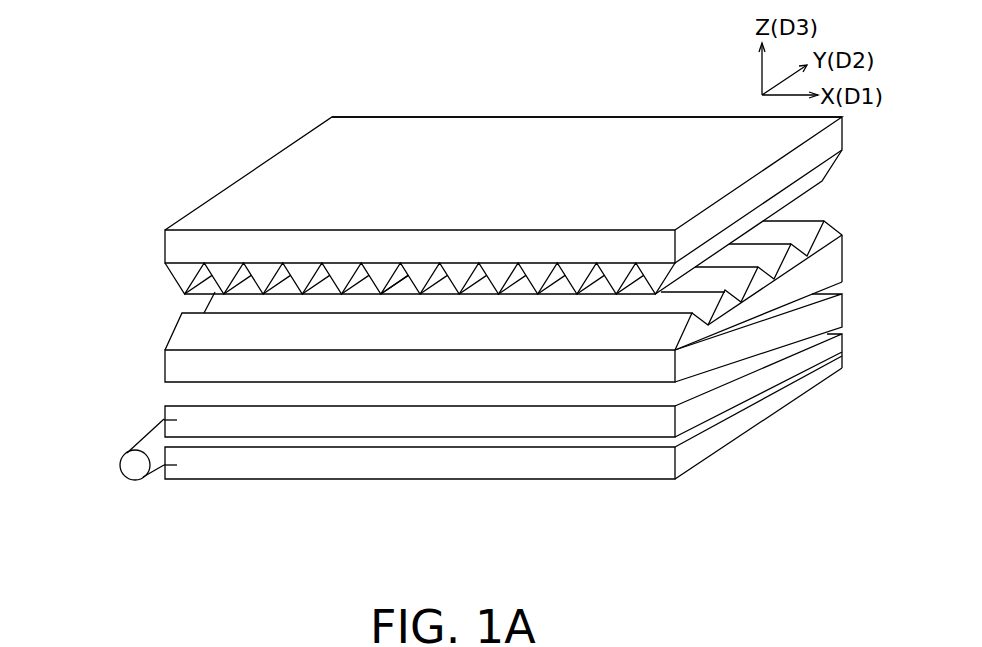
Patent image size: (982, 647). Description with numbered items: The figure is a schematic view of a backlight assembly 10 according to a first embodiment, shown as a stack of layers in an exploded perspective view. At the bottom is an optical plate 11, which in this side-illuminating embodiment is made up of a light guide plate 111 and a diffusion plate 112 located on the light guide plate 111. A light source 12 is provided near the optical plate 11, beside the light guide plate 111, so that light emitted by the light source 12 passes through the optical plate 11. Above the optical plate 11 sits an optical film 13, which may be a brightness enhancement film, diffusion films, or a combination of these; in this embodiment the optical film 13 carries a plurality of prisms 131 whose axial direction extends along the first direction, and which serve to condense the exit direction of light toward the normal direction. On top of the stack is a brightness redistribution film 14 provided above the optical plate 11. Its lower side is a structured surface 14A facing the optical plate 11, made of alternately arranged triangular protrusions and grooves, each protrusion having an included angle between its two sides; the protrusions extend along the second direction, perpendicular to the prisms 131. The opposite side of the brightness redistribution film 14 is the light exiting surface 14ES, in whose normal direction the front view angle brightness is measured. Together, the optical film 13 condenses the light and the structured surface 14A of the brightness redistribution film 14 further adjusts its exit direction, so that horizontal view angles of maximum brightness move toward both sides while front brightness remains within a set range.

The backlight assembly 10 is at (70, 84).
The optical plate 11 is at (441, 406).
The light guide plate 111 is at (147, 454).
The diffusion plate 112 is at (164, 420).
The light source 12 is at (130, 465).
The optical film 13 is at (181, 368).
The prisms 131 is at (196, 336).
The brightness redistribution film 14 is at (180, 254).
The structured surface 14A is at (153, 280).
The light exiting surface 14ES is at (308, 160).